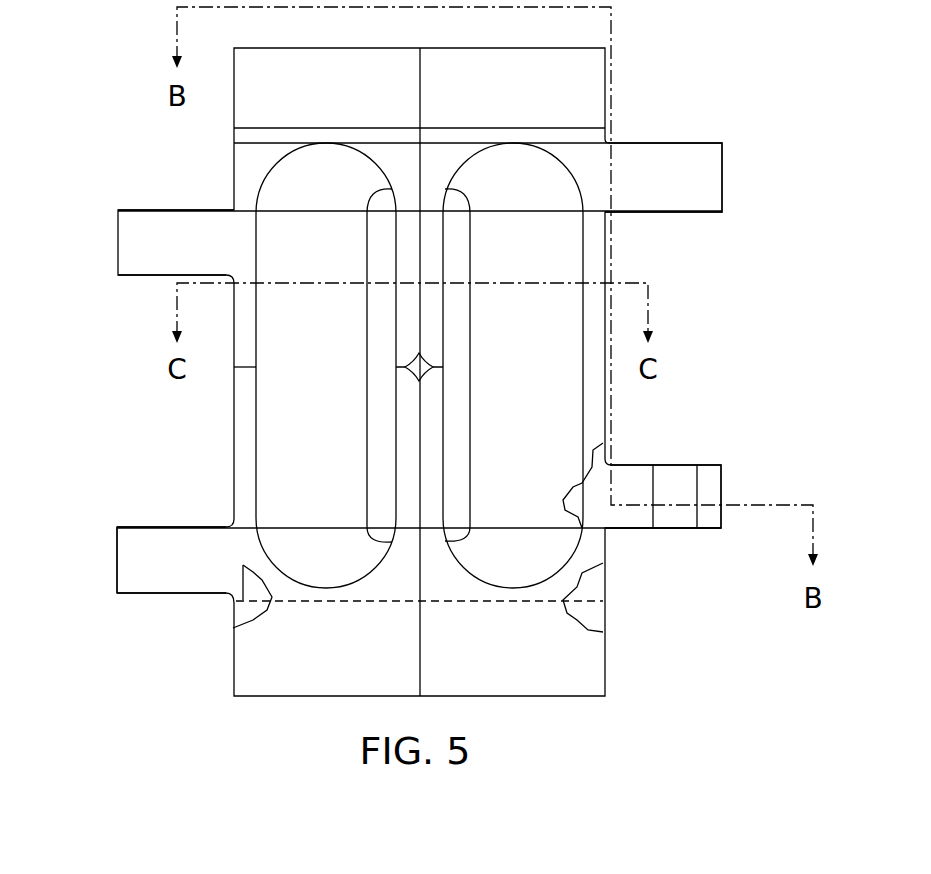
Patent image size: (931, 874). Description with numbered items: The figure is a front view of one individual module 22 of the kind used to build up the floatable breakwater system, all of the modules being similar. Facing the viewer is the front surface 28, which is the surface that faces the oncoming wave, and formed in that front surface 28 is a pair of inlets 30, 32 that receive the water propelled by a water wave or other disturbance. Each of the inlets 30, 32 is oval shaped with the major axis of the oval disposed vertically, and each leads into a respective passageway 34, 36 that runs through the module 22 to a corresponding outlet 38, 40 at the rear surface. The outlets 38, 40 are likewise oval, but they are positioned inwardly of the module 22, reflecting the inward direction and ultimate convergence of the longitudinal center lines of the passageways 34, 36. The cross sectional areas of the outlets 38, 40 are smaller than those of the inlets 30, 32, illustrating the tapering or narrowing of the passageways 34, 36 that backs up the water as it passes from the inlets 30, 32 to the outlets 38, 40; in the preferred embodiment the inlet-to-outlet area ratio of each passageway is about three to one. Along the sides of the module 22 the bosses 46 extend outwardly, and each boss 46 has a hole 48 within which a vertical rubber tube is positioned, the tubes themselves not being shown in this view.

The module 22 is at (184, 662).
The front surface 28 is at (579, 163).
The inlet 30 is at (263, 177).
The inlet 32 is at (583, 248).
The passageway 34 is at (313, 377).
The passageway 36 is at (498, 377).
The outlet 38 is at (367, 450).
The outlet 40 is at (470, 462).
The boss 46 is at (118, 255).
The hole 48 is at (697, 476).